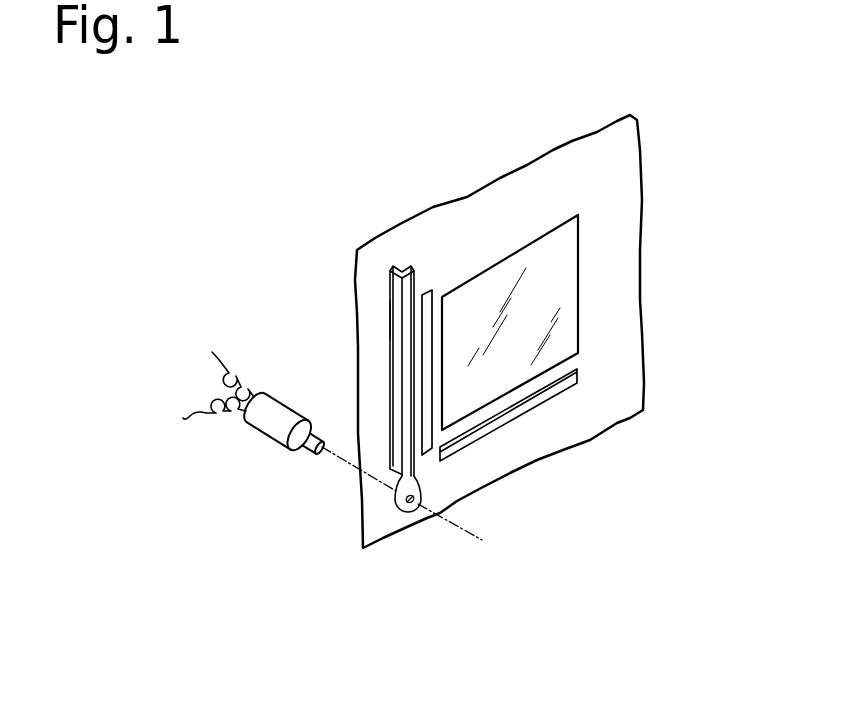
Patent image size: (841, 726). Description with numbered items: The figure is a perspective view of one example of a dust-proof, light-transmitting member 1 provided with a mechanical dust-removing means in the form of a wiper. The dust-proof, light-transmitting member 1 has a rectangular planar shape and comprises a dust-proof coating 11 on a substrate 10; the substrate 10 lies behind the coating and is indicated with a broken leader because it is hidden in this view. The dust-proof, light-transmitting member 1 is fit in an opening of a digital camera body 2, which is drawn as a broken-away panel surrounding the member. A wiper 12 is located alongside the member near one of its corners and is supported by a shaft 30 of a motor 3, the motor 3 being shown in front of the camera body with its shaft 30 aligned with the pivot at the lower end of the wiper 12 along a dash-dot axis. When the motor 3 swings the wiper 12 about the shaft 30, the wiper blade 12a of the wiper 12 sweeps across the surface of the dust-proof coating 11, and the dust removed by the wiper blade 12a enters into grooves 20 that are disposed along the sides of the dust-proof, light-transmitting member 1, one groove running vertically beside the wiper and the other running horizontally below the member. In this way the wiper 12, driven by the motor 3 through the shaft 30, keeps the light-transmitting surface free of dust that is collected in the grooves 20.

The dust-proof, light-transmitting member 1 is at (520, 77).
The digital camera body 2 is at (628, 243).
The motor 3 is at (270, 423).
The shaft 30 is at (305, 455).
The substrate 10 is at (486, 292).
The dust-proof coating 11 is at (538, 272).
The wiper 12 is at (410, 282).
The wiper blade 12a is at (393, 298).
The grooves 20 is at (427, 413).